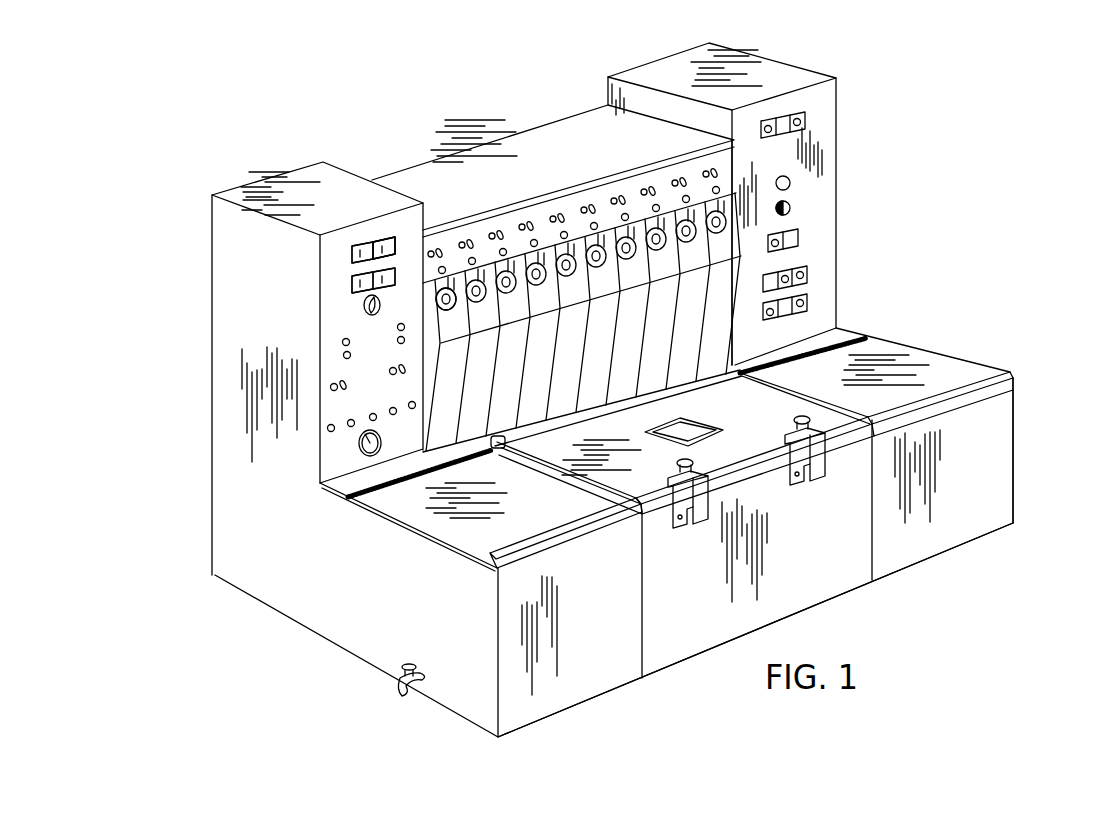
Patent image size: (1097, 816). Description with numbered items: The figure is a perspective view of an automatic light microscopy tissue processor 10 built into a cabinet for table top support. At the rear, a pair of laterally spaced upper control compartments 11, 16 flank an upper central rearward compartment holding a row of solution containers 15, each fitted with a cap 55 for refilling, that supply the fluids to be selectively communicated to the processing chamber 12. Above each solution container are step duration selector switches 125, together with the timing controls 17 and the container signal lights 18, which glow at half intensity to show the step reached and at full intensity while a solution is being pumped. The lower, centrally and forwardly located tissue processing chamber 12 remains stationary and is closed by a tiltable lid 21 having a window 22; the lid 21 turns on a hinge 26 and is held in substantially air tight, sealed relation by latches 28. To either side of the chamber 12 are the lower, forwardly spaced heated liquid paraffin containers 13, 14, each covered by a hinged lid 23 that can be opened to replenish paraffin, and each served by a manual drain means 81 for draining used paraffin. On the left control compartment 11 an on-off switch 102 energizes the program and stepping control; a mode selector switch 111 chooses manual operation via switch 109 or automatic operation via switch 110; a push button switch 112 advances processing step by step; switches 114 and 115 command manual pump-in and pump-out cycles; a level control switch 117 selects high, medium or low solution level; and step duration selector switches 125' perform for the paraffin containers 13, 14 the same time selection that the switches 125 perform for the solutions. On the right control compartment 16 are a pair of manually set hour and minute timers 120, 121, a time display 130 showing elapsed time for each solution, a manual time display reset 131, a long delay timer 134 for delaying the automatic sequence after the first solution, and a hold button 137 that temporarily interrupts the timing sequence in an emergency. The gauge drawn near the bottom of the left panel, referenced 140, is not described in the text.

The automatic light microscopy tissue processor 10 is at (478, 122).
The control compartment 11 is at (213, 329).
The tissue processing chamber 12 is at (818, 606).
The heated liquid paraffin container 13 is at (576, 713).
The heated liquid paraffin container 14 is at (1018, 437).
The solution containers 15 is at (578, 364).
The control compartment 16 is at (840, 139).
The timing controls 17 is at (762, 262).
The container signal lights 18 is at (568, 232).
The tiltable lid 21 is at (588, 460).
The window 22 is at (698, 426).
The lid 23 is at (428, 525).
The hinge 26 is at (505, 442).
The latches 28 is at (700, 468).
The caps 55 is at (436, 314).
The manual drain means 81 is at (395, 684).
The on-off switch 102 is at (351, 254).
The switch 109 is at (383, 244).
The switch 110 is at (393, 255).
The mode selector switch 111 is at (360, 242).
The push button switch 112 is at (357, 281).
The switch 114 is at (352, 275).
The switch 115 is at (383, 284).
The level control switch 117 is at (368, 313).
The manually set timer 120 is at (808, 278).
The manually set timer 121 is at (808, 305).
The step duration selector switches 125 is at (576, 209).
The step duration selector switches 125' is at (347, 385).
The time display 130 is at (806, 117).
The manual time display reset 131 is at (791, 185).
The long delay timer 134 is at (801, 238).
The hold button 137 is at (792, 208).
The gauge 140 is at (375, 418).